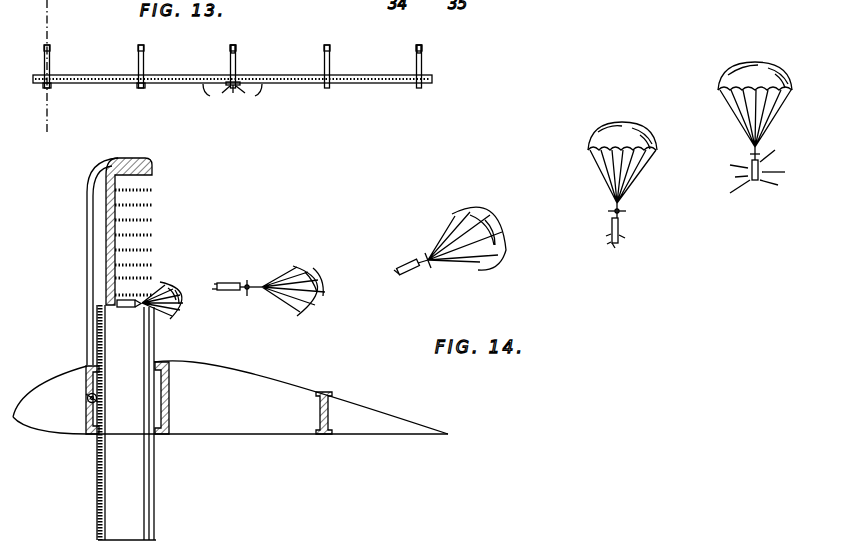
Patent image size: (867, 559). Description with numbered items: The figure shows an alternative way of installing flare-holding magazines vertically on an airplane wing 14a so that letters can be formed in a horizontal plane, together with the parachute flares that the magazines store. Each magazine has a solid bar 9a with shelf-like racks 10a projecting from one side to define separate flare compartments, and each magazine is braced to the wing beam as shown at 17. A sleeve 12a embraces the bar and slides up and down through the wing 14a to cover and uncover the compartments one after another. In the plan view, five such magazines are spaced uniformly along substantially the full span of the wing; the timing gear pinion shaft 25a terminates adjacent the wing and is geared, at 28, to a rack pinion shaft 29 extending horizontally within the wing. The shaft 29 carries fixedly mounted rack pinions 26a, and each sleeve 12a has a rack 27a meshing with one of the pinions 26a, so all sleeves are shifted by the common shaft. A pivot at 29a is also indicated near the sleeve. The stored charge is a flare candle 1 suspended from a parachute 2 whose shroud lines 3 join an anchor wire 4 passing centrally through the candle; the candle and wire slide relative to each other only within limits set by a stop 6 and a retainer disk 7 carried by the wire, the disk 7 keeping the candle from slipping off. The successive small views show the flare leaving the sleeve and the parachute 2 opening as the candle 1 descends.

In FIG. 14, the flare candle 1 is at (116, 305).
In FIG. 14, the parachute 2 is at (483, 213).
In FIG. 14, the shroud lines 3 is at (174, 284).
In FIG. 14, the anchor wire 4 is at (247, 297).
In FIG. 14, the abutment or stop 6 is at (247, 282).
In FIG. 14, the retainer disk 7 is at (218, 292).
In FIG. 14, the bar 9a is at (136, 163).
In FIG. 13, the racks 10a is at (236, 55).
In FIG. 14, the racks 10a is at (149, 233).
In FIG. 13, the sleeve 12a is at (50, 71).
In FIG. 14, the sleeve 12a is at (135, 482).
In FIG. 13, the wing 14a is at (370, 77).
In FIG. 14, the wing 14a is at (263, 378).
In FIG. 14, the brace 17 is at (88, 250).
In FIG. 13, the timing gear pinion shaft 25a is at (247, 90).
In FIG. 13, the rack pinions 26a is at (48, 86).
In FIG. 14, the rack pinions 26a is at (86, 398).
In FIG. 14, the rack 27a is at (99, 448).
In FIG. 13, the gearing 28 is at (231, 88).
In FIG. 13, the rack pinion shaft 29 is at (276, 76).
In FIG. 14, the pivot 29a is at (88, 402).